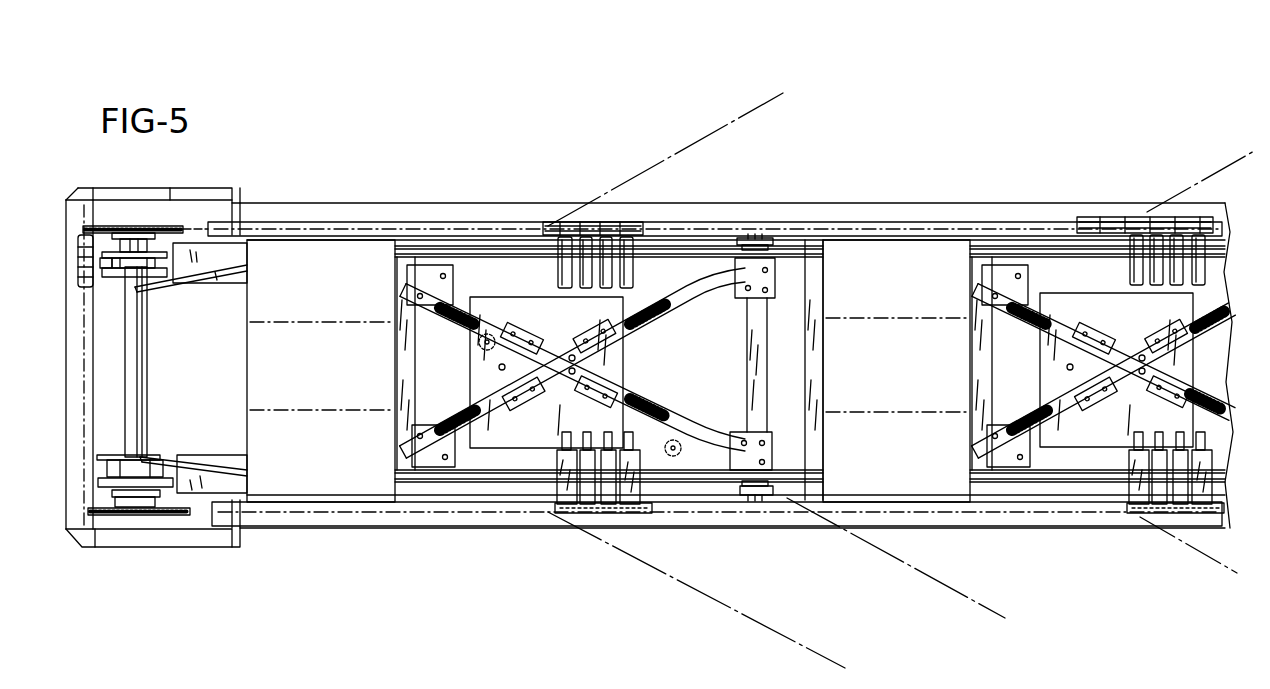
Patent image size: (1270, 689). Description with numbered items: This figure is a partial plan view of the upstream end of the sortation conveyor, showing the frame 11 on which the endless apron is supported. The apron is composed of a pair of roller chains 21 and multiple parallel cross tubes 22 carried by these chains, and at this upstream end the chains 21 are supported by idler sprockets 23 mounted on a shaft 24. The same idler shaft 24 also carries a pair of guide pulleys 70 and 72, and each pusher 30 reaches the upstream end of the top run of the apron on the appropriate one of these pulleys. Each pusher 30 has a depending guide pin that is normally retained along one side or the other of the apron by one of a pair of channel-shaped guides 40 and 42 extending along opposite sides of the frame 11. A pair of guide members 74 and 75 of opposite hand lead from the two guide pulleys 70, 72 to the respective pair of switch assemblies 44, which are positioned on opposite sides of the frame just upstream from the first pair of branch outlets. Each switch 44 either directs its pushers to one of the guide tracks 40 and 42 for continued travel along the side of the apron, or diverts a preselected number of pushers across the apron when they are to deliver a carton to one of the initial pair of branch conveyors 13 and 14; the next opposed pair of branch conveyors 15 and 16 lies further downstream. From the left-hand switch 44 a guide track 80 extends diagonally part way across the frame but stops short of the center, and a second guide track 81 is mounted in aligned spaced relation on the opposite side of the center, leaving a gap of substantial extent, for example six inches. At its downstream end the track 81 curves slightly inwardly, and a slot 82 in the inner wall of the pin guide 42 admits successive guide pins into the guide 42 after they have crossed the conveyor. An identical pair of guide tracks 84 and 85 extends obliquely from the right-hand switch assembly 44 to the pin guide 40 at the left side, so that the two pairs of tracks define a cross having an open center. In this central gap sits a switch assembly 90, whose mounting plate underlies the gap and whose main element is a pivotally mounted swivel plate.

The frame 11 is at (308, 533).
The branch conveyor 13 is at (714, 129).
The branch conveyor 14 is at (748, 622).
The branch conveyor 15 is at (1175, 188).
The branch conveyor 16 is at (1200, 558).
The roller chain 21 is at (622, 225).
The cross tube 22 is at (557, 270).
The idler sprocket 23 is at (180, 230).
The shaft 24 is at (150, 362).
The pusher element 30 is at (78, 270).
The channel-shaped guide 40 is at (464, 240).
The channel-shaped guide 42 is at (450, 478).
The switch assembly 44 is at (337, 301).
The guide pulley 70 is at (130, 228).
The guide pulley 72 is at (112, 468).
The guide member 74 is at (203, 262).
The guide member 75 is at (192, 468).
The guide track 80 is at (453, 320).
The guide track 81 is at (668, 417).
The slot 82 is at (728, 490).
The guide track 84 is at (466, 420).
The guide track 85 is at (670, 312).
The switch assembly 90 is at (523, 433).